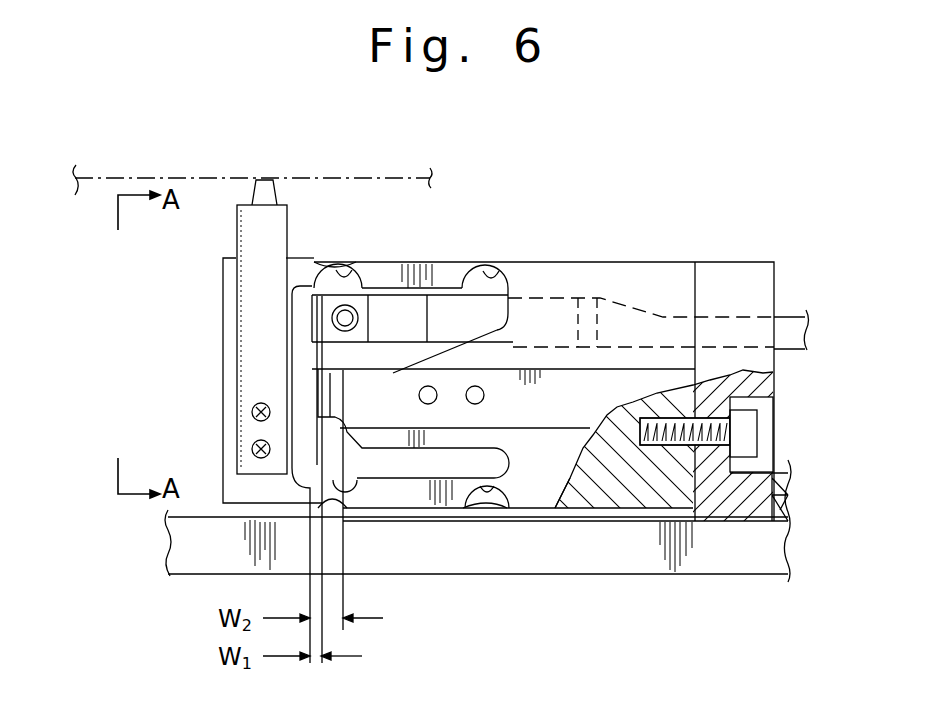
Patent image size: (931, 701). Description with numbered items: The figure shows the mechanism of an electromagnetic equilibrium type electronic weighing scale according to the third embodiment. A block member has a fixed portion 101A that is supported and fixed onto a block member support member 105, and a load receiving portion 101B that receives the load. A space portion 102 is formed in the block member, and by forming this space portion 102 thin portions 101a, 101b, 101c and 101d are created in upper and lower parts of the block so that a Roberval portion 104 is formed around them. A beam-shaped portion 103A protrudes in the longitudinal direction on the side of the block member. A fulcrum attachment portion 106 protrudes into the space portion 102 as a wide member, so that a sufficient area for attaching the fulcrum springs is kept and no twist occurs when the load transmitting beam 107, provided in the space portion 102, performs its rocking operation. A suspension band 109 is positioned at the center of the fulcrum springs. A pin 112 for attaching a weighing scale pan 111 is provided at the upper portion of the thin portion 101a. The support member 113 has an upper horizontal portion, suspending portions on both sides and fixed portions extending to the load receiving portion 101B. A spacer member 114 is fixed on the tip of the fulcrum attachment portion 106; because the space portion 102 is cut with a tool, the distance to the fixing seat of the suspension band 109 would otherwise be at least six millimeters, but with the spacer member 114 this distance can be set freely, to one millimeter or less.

The fixed portion 101A is at (652, 288).
The load receiving portion 101B is at (223, 375).
The thin portion 101a is at (348, 274).
The thin portion 101b is at (478, 322).
The thin portion 101c is at (342, 492).
The thin portion 101d is at (560, 478).
The space portion 102 is at (417, 463).
The beam-shaped portion 103A is at (573, 402).
The Roberval portion 104 is at (400, 488).
The block member support member 105 is at (738, 277).
The fulcrum attachment portion 106 is at (370, 403).
The load transmitting beam 107 is at (505, 277).
The suspension band 109 is at (316, 416).
The weighing scale pan 111 is at (356, 178).
The pin 112 is at (266, 191).
The support member 113 is at (257, 230).
The spacer member 114 is at (335, 396).